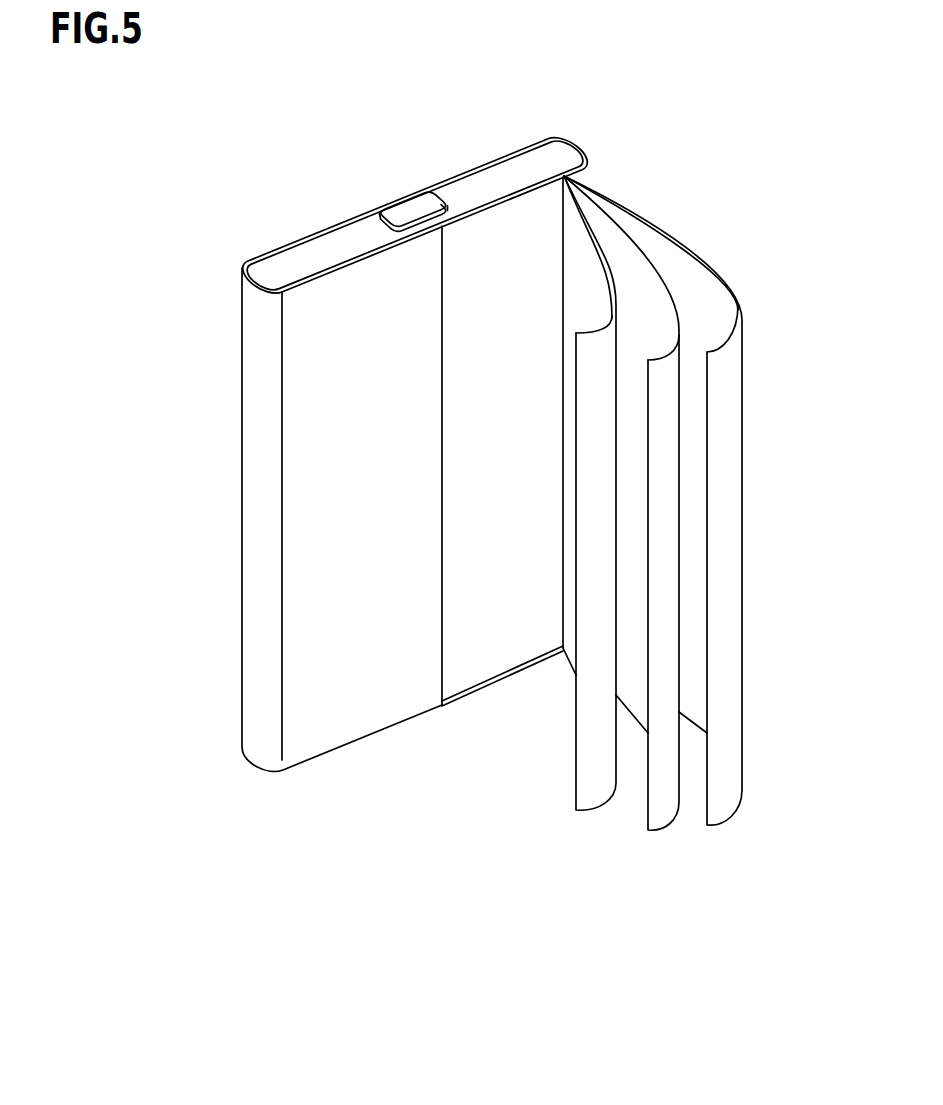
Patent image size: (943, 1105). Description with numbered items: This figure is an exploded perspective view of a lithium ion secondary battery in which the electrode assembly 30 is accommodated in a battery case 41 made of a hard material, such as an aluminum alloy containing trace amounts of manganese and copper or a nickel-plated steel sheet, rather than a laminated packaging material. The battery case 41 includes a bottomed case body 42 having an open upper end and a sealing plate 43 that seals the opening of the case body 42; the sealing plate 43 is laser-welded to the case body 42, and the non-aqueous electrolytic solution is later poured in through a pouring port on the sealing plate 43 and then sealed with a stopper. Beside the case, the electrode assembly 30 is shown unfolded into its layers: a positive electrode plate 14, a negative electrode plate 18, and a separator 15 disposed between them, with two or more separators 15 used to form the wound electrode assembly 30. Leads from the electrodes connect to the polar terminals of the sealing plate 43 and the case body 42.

The electrode assembly 30 is at (658, 145).
The battery case 41 is at (136, 250).
The case body 42 is at (258, 395).
The sealing plate 43 is at (268, 267).
The positive electrode plate 14 is at (733, 623).
The separator 15 is at (668, 803).
The negative electrode plate 18 is at (602, 793).